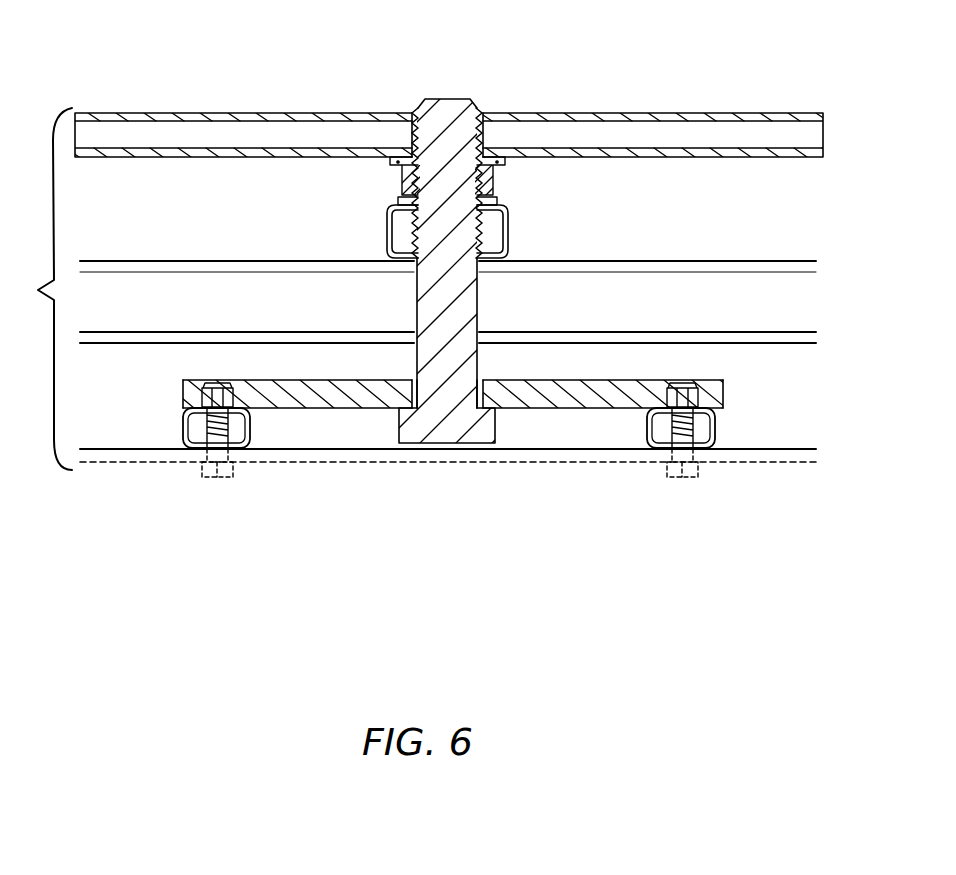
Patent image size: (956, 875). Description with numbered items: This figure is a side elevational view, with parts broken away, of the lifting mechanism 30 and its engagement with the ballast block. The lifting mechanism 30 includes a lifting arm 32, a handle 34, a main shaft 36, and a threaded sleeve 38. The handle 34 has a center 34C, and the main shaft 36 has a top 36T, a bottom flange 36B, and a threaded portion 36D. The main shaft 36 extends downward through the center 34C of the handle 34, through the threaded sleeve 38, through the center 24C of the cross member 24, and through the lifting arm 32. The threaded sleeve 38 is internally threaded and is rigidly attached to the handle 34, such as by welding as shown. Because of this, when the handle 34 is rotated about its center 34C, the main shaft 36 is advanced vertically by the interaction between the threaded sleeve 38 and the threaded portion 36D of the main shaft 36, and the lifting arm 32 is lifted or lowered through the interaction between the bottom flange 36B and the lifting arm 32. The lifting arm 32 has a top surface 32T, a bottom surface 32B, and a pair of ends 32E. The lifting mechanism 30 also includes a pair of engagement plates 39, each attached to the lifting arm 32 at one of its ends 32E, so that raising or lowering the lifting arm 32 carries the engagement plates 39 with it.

The lifting mechanism 30 is at (415, 289).
The handle 34 is at (235, 113).
The center of the handle 34C is at (484, 125).
The cross member 24 is at (117, 260).
The center of the cross member 24C is at (380, 344).
The main shaft 36 is at (480, 308).
The top of the main shaft 36T is at (452, 99).
The bottom flange 36B is at (497, 428).
The threaded portion 36D is at (500, 160).
The threaded sleeve 38 is at (495, 182).
The lifting arm 32 is at (327, 408).
The top surface 32T is at (252, 380).
The bottom surface 32B is at (280, 408).
The ends of the lifting arm 32E is at (184, 393).
The engagement plates 39 is at (182, 433).